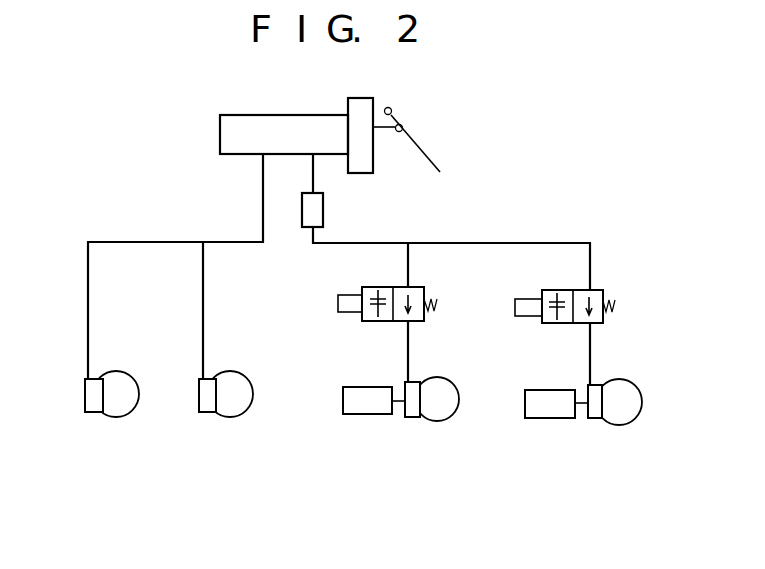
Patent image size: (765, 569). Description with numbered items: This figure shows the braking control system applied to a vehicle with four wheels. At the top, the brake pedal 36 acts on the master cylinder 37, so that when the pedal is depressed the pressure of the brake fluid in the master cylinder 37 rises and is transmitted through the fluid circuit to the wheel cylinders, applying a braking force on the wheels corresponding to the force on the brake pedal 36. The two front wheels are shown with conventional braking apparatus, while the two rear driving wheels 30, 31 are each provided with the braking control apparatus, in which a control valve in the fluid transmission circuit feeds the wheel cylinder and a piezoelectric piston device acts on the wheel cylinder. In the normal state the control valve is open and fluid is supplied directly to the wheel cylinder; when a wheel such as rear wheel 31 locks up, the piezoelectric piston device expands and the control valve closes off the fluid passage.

The rear wheel 30 is at (440, 413).
The rear wheel 31 is at (620, 418).
The brake pedal 36 is at (426, 156).
The master cylinder 37 is at (230, 149).